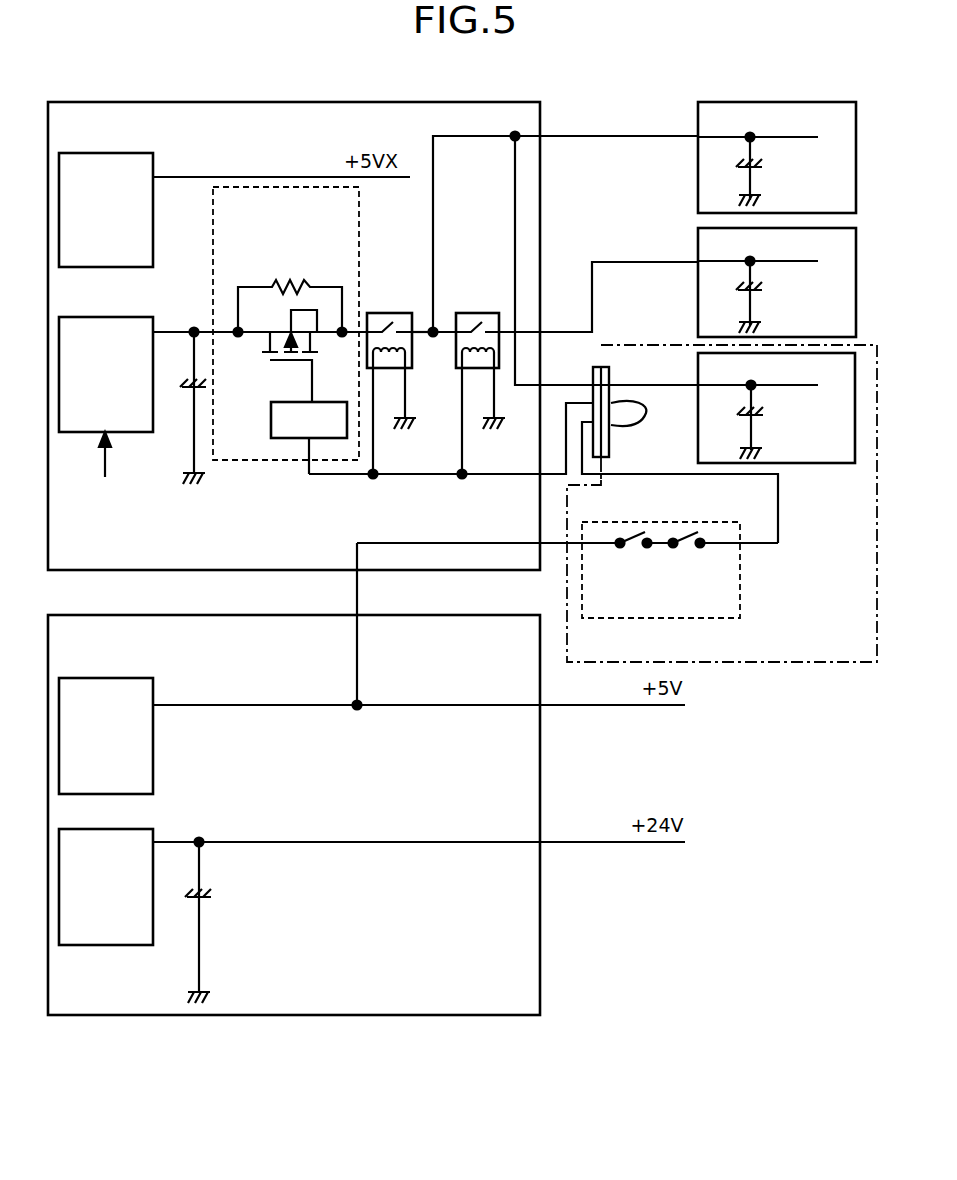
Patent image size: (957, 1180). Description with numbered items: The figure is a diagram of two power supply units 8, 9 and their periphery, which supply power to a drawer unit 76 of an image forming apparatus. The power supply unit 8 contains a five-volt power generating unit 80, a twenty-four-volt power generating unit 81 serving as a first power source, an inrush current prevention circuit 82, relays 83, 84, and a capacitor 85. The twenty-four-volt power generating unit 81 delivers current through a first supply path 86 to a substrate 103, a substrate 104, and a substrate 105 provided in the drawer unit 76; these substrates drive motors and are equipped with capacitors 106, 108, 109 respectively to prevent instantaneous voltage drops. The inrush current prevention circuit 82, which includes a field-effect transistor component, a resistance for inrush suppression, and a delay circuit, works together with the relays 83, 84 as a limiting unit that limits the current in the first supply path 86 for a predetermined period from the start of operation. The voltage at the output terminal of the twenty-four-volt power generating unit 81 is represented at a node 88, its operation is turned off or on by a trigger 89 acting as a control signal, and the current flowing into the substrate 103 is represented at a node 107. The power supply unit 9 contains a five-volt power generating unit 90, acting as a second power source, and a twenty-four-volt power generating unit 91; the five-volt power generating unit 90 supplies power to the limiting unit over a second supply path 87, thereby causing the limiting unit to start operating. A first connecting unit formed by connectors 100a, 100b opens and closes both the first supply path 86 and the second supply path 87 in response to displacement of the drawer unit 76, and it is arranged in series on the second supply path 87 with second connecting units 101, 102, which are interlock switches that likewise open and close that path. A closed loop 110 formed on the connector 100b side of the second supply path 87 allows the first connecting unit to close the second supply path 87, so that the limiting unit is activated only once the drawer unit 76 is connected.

The power supply unit 8 is at (138, 86).
The 5V power generating unit 80 is at (112, 136).
The 24V power generating unit 81 is at (112, 300).
The inrush current prevention circuit 82 is at (250, 461).
The relay 83 is at (388, 312).
The relay 84 is at (477, 312).
The capacitor 85 is at (184, 397).
The first supply path 86 is at (418, 336).
The second supply path 87 is at (414, 477).
The node 88 is at (194, 327).
The trigger 89 is at (108, 468).
The power supply unit 9 is at (137, 615).
The 5V power generating unit 90 is at (112, 661).
The 24V power generating unit 91 is at (112, 812).
The connector 100a is at (593, 376).
The connector 100b is at (618, 424).
The second connecting unit 101 is at (629, 532).
The second connecting unit 102 is at (682, 532).
The substrate 103 is at (746, 408).
The substrate 104 is at (746, 157).
The substrate 105 is at (746, 282).
The capacitor 106 is at (763, 420).
The node 107 is at (756, 390).
The capacitor 108 is at (760, 172).
The capacitor 109 is at (760, 296).
The closed loop 110 is at (624, 405).
The drawer unit 76 is at (832, 663).